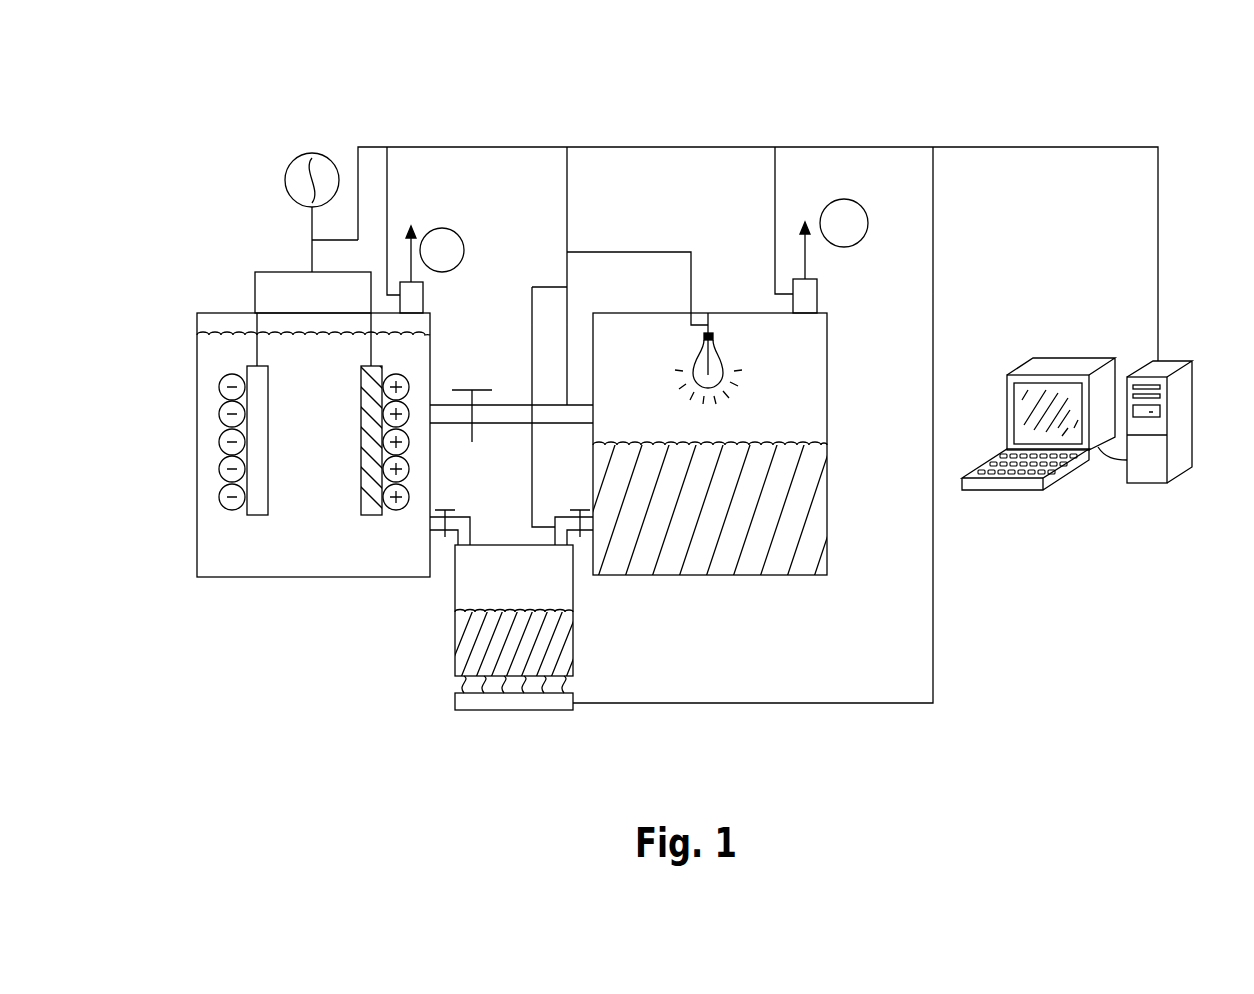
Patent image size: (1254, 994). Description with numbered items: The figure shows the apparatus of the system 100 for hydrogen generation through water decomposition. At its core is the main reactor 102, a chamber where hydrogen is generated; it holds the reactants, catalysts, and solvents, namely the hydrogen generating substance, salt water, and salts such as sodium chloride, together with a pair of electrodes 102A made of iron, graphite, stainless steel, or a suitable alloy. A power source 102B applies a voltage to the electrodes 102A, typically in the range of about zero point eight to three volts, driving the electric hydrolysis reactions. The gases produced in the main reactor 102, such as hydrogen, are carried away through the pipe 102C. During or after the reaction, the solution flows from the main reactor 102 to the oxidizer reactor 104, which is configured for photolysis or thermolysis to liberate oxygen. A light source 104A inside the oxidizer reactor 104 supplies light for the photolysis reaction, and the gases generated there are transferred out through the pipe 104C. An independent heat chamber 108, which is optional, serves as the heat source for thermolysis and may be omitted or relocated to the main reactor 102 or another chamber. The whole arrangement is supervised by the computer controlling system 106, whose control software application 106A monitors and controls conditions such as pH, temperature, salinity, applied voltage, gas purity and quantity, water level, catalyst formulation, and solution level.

The system 100 is at (178, 80).
The main reactor 102 is at (194, 275).
The electrodes 102A is at (373, 522).
The power source 102B is at (312, 153).
The pipe 102C is at (423, 298).
The oxidizer reactor 104 is at (827, 415).
The light source 104A is at (699, 356).
The pipe 104C is at (817, 295).
The computer controlling system 106 is at (1056, 292).
The control software application 106A is at (1165, 488).
The heat chamber 108 is at (598, 656).